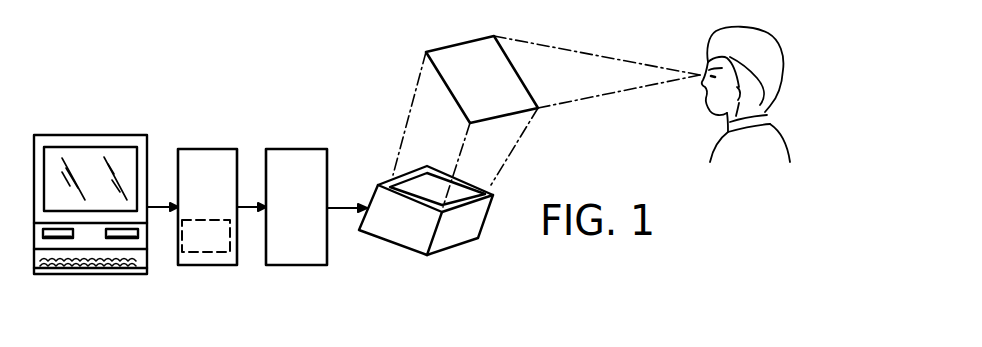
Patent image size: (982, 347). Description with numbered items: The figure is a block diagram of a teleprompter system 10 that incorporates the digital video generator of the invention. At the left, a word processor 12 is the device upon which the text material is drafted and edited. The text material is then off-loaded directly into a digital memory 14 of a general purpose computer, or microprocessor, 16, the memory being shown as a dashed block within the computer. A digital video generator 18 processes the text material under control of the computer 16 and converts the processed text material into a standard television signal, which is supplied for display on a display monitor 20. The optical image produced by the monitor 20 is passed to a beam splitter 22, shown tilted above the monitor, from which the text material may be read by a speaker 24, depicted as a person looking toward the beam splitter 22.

The teleprompter system 10 is at (350, 96).
The word processor 12 is at (93, 135).
The digital memory 14 is at (203, 253).
The general purpose computer 16 is at (209, 149).
The digital video generator 18 is at (300, 149).
The display monitor 20 is at (412, 254).
The beam splitter 22 is at (453, 47).
The speaker 24 is at (733, 26).